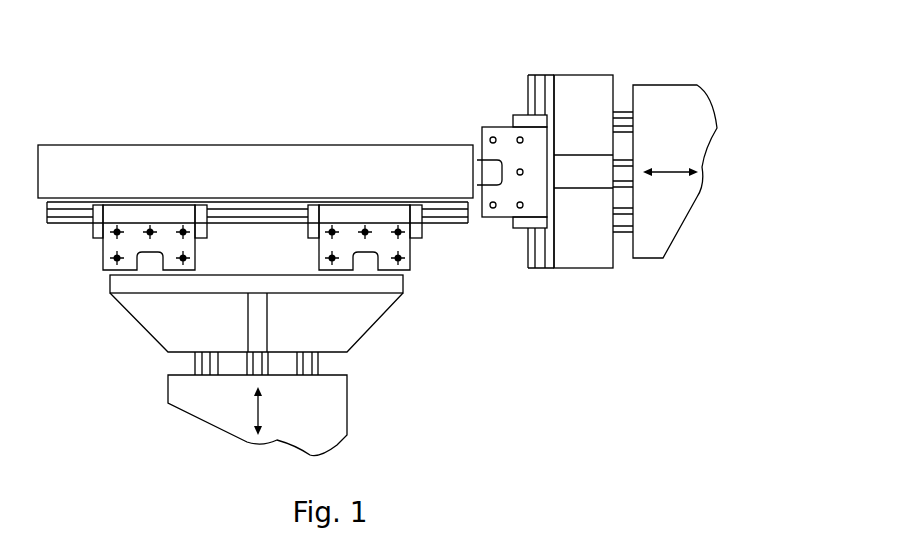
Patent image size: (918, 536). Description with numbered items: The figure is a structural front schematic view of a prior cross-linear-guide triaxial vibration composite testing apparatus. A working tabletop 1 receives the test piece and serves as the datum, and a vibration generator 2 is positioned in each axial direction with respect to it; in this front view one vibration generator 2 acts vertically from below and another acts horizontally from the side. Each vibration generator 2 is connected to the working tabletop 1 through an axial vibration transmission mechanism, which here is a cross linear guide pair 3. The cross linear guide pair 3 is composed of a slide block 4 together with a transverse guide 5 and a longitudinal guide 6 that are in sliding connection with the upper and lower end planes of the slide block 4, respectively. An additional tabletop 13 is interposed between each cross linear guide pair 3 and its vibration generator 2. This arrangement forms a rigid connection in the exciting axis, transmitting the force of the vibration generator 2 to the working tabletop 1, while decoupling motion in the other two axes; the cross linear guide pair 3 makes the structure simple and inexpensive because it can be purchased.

The working tabletop 1 is at (160, 165).
The vibration generator 2 is at (337, 400).
The cross linear guide pair 3 is at (98, 249).
The slide block 4 is at (528, 210).
The transverse guide 5 is at (484, 166).
The longitudinal guide 6 is at (533, 92).
The additional tabletop 13 is at (163, 318).